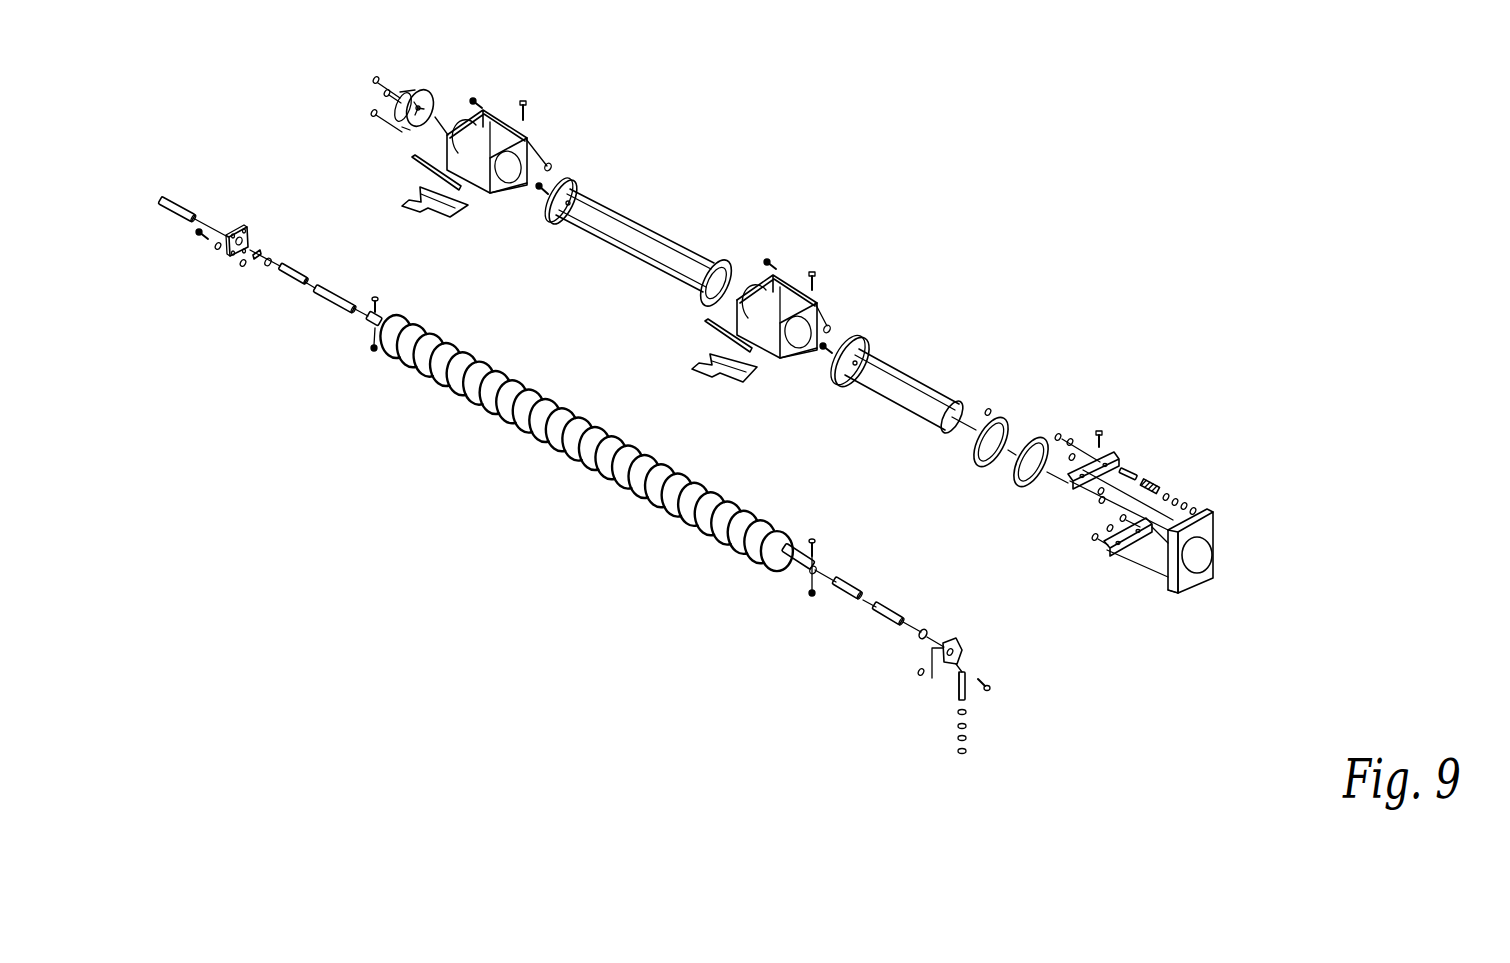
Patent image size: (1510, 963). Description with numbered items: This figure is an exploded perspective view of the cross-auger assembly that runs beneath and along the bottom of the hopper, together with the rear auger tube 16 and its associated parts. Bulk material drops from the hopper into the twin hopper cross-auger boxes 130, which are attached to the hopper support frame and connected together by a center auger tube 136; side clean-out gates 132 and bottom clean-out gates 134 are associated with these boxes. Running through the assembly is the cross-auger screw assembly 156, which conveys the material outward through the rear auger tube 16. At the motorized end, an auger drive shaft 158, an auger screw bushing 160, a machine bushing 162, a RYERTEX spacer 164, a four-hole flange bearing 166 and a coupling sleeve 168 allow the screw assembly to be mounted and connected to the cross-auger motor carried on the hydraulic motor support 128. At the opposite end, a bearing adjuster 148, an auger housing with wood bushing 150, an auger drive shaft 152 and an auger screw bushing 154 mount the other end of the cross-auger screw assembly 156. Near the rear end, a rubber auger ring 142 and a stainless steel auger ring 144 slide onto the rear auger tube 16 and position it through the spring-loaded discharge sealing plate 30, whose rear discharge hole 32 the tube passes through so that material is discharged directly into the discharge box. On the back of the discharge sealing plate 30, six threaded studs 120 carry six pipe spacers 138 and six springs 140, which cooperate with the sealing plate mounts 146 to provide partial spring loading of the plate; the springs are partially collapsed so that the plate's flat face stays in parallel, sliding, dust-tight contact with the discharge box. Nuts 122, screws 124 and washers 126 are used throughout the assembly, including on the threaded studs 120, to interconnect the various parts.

The rear auger tube 16 is at (885, 362).
The discharge sealing plate 30 is at (1188, 578).
The rear discharge hole 32 is at (1198, 555).
The threaded studs 120 is at (1212, 510).
The nuts 122 is at (242, 266).
The screws 124 is at (198, 233).
The washers 126 is at (216, 248).
The hydraulic motor support 128 is at (432, 95).
The twin hopper cross-auger boxes 130 is at (505, 128).
The side clean-out gates 132 is at (412, 160).
The bottom clean-out gates 134 is at (450, 217).
The center auger tube 136 is at (645, 228).
The pipe spacers 138 is at (1130, 470).
The springs 140 is at (1152, 483).
The rubber auger ring 142 is at (1032, 436).
The stainless steel auger ring 144 is at (995, 416).
The sealing plate mounts 146 is at (1112, 452).
The bearing adjuster 148 is at (965, 673).
The auger housing with wood bushing 150 is at (953, 645).
The auger drive shaft 152 is at (885, 615).
The auger screw bushing 154 is at (848, 578).
The cross-auger screw assembly 156 is at (718, 545).
The auger drive shaft 158 is at (333, 292).
The auger screw bushing 160 is at (293, 268).
The machine bushing 162 is at (267, 266).
The RYERTEX spacer 164 is at (257, 250).
The four-hole flange bearing 166 is at (240, 232).
The coupling sleeve 168 is at (182, 203).